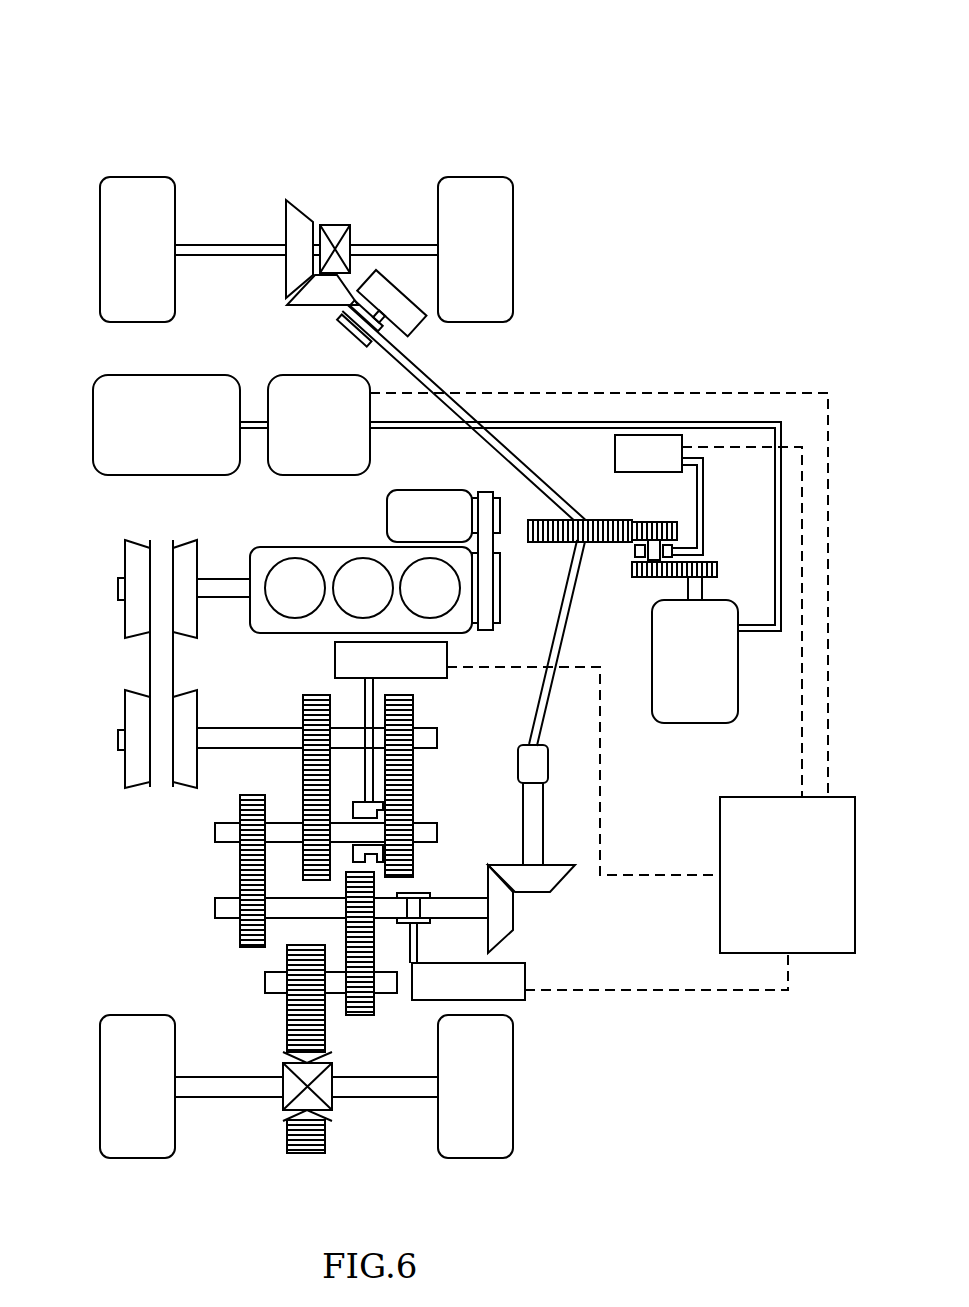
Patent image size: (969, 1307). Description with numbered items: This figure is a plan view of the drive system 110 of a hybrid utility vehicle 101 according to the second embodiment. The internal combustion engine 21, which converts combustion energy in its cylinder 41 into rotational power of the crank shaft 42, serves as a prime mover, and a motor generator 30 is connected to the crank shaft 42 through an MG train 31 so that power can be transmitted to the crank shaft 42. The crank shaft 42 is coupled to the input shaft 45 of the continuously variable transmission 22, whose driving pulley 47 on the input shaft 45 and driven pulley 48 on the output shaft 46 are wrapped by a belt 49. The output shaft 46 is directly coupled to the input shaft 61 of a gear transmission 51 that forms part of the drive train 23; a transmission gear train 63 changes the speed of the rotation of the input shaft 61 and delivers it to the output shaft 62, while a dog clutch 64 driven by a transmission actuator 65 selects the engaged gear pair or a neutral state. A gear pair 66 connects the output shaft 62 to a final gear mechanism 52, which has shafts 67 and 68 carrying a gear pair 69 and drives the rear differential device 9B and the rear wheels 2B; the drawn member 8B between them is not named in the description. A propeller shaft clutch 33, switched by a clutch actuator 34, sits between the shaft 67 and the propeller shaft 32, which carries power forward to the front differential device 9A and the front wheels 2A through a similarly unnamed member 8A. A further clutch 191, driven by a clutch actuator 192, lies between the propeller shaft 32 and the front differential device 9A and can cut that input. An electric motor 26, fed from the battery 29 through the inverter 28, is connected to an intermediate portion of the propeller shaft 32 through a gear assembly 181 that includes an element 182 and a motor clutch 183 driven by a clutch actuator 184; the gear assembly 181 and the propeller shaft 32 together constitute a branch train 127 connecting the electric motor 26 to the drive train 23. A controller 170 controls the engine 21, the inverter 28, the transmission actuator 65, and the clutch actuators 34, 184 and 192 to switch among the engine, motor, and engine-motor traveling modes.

The hybrid utility vehicle 101 is at (162, 90).
The drive system 110 is at (561, 589).
The front wheels 2A is at (136, 177).
The front axle 8A is at (232, 245).
The front differential device 9A is at (347, 230).
The rear wheels 2B is at (135, 1158).
The rear axle 8B is at (233, 1097).
The rear differential device 9B is at (330, 1112).
The clutch 191 is at (385, 327).
The clutch actuator 192 is at (395, 295).
The battery 29 is at (203, 375).
The inverter 28 is at (298, 375).
The motor generator 30 is at (425, 490).
The MG train 31 is at (480, 492).
The cylinder 41 is at (355, 547).
The internal combustion engine 21 is at (258, 633).
The crank shaft 42 is at (224, 579).
The continuously variable transmission 22 is at (134, 639).
The driving pulley 47 is at (125, 545).
The driven pulley 48 is at (125, 698).
The belt 49 is at (150, 667).
The input shaft 45 is at (118, 590).
The output shaft 46 is at (118, 742).
The drive train 23 is at (268, 875).
The gear transmission 51 is at (291, 787).
The final gear mechanism 52 is at (245, 933).
The input shaft 61 is at (437, 737).
The output shaft 62 is at (437, 832).
The transmission gear train 63 is at (413, 775).
The dog clutch 64 is at (356, 800).
The transmission actuator 65 is at (447, 651).
The gear pair 66 is at (240, 862).
The shaft 67 is at (215, 908).
The shaft 68 is at (265, 982).
The gear pair 69 is at (358, 1015).
The propeller shaft clutch 33 is at (428, 926).
The clutch actuator 34 is at (525, 968).
The propeller shaft 32 is at (553, 686).
The branch train 127 is at (584, 600).
The gear assembly 181 is at (647, 532).
The gear 182 is at (656, 520).
The motor clutch 183 is at (637, 549).
The clutch actuator 184 is at (615, 452).
The electric motor 26 is at (738, 663).
The controller 170 is at (750, 797).